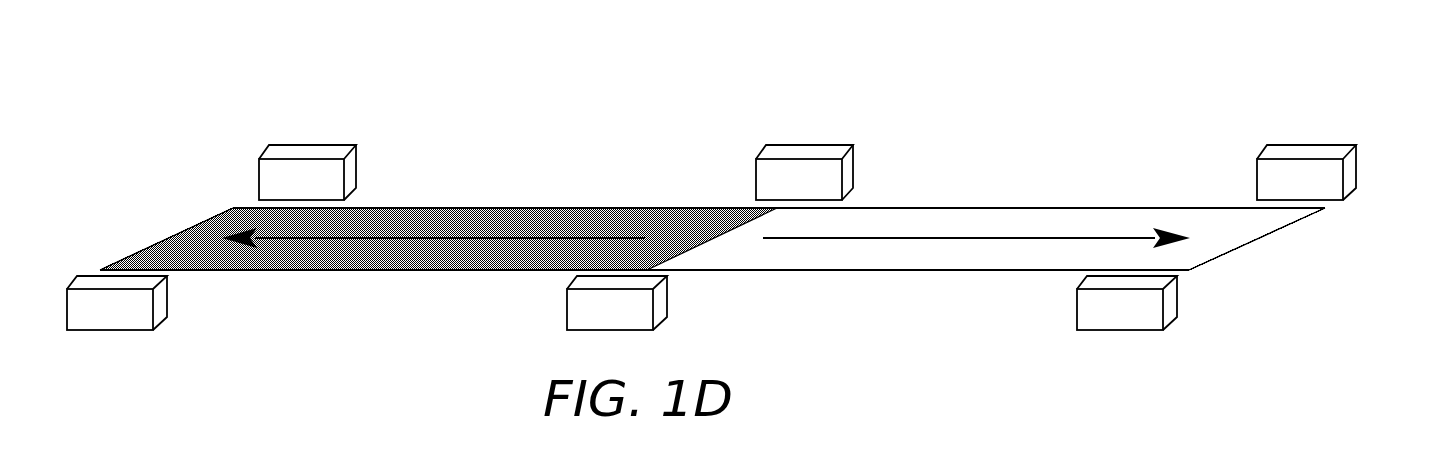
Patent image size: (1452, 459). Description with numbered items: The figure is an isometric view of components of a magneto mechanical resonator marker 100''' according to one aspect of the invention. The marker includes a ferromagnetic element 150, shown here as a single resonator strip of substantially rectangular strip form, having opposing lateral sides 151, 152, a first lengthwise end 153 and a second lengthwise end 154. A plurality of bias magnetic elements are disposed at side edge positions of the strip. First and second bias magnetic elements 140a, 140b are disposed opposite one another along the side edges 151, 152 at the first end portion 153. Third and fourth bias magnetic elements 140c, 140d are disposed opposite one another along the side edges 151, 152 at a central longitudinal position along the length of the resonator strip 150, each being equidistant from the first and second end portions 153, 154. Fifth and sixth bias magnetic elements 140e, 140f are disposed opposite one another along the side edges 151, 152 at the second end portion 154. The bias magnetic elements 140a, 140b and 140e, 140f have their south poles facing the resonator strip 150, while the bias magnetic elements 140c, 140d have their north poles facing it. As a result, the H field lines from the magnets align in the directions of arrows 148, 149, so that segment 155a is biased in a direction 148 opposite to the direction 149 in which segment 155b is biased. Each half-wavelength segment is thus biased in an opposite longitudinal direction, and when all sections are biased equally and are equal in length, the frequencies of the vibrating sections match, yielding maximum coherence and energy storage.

The MMR marker 100''' is at (1382, 70).
The first bias magnetic element 140a is at (310, 155).
The second bias magnetic element 140b is at (160, 303).
The third bias magnetic element 140c is at (810, 155).
The fourth bias magnetic element 140d is at (658, 302).
The fifth bias magnetic element 140e is at (1287, 150).
The sixth bias magnetic element 140f is at (1077, 313).
The bias direction arrow 148 is at (490, 237).
The bias direction arrow 149 is at (948, 237).
The ferromagnetic element 150 is at (562, 200).
The lateral side 151 is at (650, 207).
The lateral side 152 is at (453, 273).
The first lengthwise end 153 is at (182, 230).
The second lengthwise end 154 is at (1252, 243).
The segment 155a is at (408, 207).
The segment 155b is at (1073, 207).